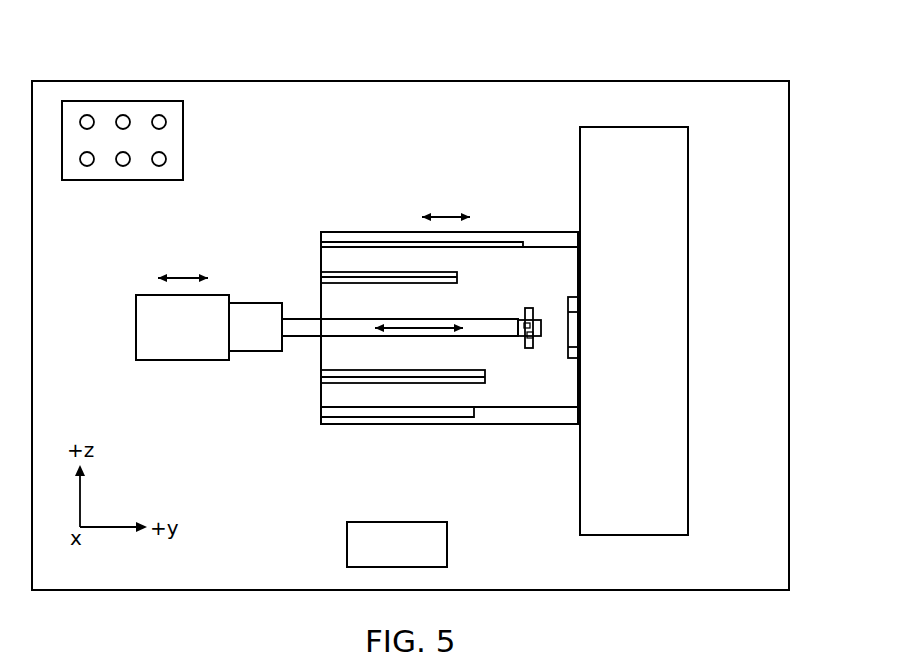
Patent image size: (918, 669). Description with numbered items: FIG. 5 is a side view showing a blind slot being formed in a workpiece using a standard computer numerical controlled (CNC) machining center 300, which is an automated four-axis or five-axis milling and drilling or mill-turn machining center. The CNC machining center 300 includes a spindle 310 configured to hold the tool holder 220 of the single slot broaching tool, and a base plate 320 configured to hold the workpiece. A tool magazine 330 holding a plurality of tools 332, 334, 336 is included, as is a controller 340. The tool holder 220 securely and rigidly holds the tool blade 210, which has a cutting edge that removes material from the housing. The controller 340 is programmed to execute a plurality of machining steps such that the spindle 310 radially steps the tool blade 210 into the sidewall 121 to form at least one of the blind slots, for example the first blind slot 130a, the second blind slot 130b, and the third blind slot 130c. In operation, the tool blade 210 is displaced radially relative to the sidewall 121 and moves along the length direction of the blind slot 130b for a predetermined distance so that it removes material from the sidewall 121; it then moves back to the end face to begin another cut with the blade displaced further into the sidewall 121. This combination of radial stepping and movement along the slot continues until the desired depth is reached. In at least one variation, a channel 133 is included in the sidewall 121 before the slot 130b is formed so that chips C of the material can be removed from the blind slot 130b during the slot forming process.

The standard computer numerical controlled (CNC) machining center 300 is at (692, 81).
The spindle 310 is at (153, 356).
The base plate 320 is at (670, 182).
The tool magazine 330 is at (97, 180).
The tool 332 is at (87, 116).
The tool 334 is at (160, 121).
The tool 336 is at (160, 158).
The controller 340 is at (447, 543).
The sidewall 121 is at (325, 295).
The first blind slot 130a is at (342, 373).
The second blind slot 130b is at (537, 317).
The third blind slot 130c is at (323, 277).
The channel 133 is at (532, 343).
The tool blade 210 is at (310, 330).
The tool holder 220 is at (247, 343).
The chips C is at (527, 325).